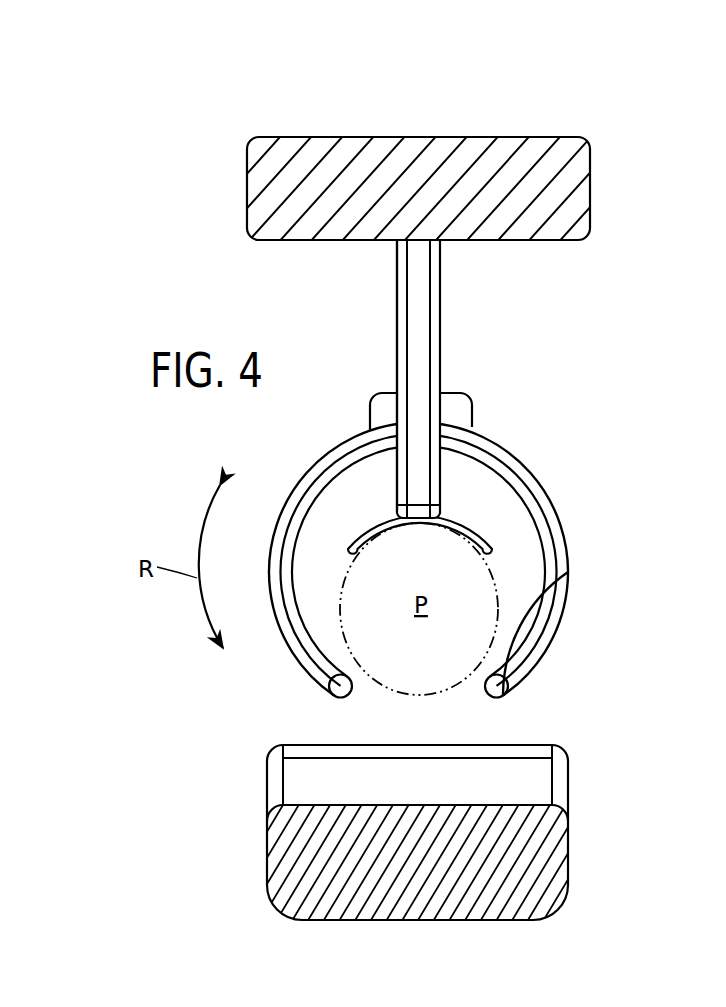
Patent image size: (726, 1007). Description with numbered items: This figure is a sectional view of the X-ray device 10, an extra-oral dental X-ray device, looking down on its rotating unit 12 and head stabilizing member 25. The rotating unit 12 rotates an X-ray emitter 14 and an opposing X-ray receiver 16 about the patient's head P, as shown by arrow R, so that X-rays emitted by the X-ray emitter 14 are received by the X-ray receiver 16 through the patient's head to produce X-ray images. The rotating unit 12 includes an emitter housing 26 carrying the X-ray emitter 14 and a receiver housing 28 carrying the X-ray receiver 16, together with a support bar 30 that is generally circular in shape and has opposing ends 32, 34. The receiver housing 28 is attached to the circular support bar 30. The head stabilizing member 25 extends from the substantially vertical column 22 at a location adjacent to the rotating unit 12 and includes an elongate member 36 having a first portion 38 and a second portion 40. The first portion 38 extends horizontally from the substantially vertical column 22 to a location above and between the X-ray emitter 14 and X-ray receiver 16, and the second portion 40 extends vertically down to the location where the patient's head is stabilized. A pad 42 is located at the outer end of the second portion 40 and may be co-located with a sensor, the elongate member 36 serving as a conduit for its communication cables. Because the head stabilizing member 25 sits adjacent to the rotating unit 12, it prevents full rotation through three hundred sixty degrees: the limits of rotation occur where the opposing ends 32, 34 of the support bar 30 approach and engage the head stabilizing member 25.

The X-ray device 10 is at (612, 120).
The rotating unit 12 is at (595, 790).
The X-ray emitter 14 is at (543, 747).
The X-ray receiver 16 is at (452, 431).
The substantially vertical column 22 is at (412, 148).
The head stabilizing member 25 is at (388, 343).
The emitter housing 26 is at (560, 862).
The receiver housing 28 is at (452, 403).
The support bar 30 is at (558, 531).
The opposing end 32 is at (496, 698).
The opposing end 34 is at (340, 698).
The elongate member 36 is at (420, 308).
The first portion 38 is at (413, 278).
The second portion 40 is at (424, 507).
The pad 42 is at (354, 543).